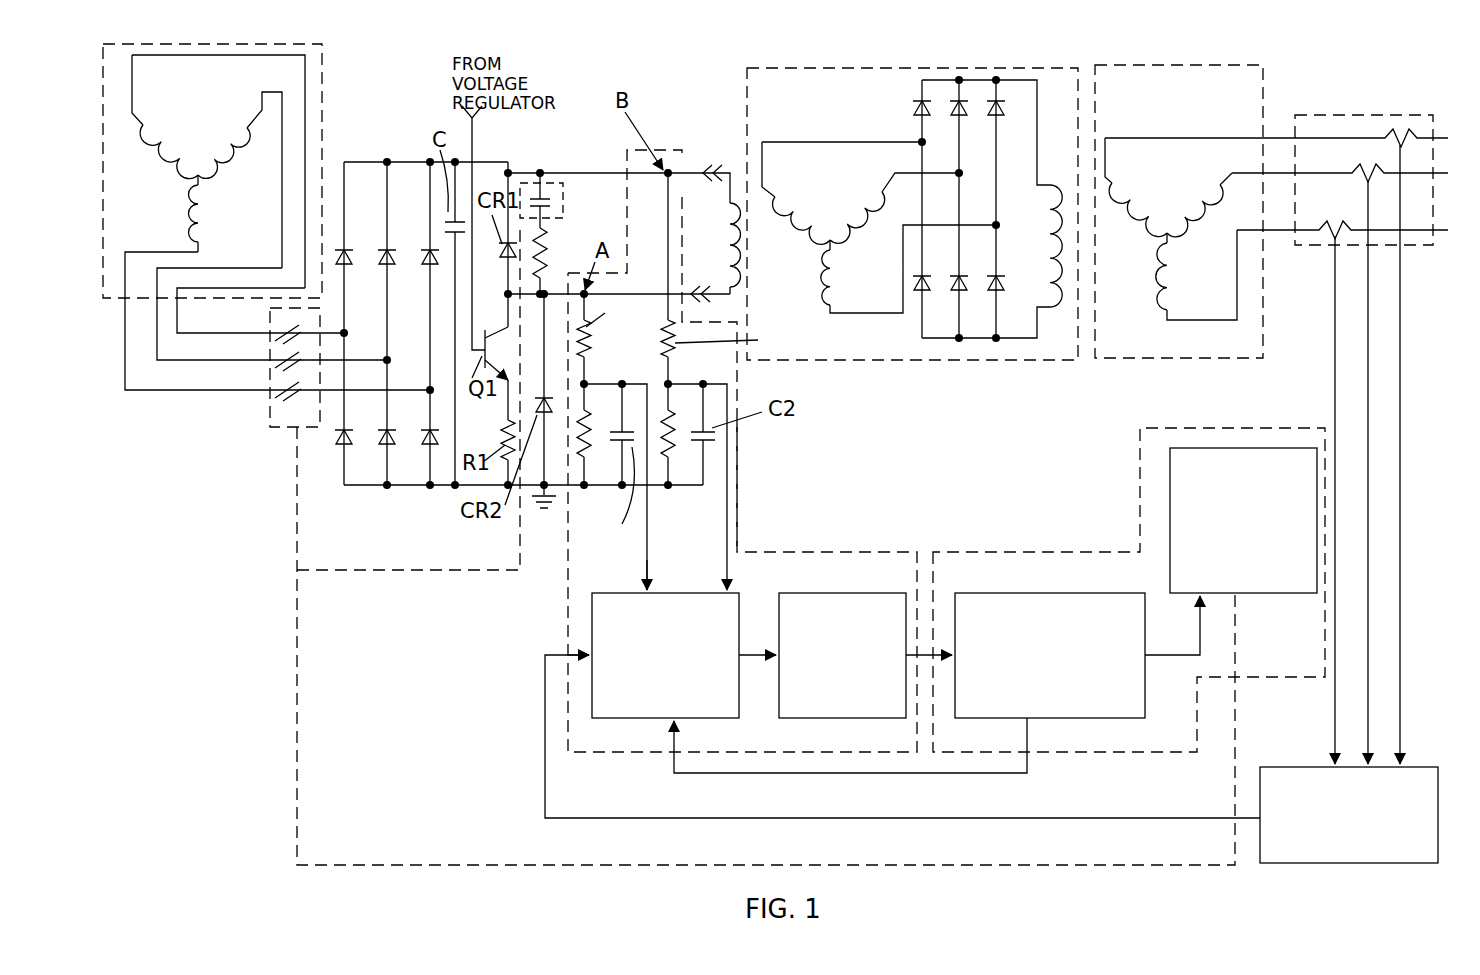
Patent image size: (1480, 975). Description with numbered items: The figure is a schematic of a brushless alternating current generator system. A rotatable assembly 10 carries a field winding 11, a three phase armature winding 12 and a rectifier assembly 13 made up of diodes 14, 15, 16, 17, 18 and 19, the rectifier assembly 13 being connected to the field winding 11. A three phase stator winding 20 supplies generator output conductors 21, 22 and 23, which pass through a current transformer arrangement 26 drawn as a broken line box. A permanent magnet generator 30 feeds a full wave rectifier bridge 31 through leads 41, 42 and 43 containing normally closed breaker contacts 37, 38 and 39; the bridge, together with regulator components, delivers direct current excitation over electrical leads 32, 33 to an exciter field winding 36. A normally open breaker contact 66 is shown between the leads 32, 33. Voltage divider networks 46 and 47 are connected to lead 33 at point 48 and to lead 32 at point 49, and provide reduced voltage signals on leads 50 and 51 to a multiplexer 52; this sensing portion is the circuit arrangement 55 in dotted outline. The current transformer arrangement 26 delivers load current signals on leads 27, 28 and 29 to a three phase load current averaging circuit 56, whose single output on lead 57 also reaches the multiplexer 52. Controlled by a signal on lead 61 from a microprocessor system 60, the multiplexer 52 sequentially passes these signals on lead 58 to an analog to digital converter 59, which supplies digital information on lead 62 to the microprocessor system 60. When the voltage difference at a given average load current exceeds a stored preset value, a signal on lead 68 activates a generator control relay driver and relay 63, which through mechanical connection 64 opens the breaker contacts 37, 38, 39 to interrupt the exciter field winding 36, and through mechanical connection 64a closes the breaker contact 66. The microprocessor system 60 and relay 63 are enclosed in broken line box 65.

The rotatable assembly 10 is at (810, 67).
The field winding 11 is at (1065, 258).
The three phase armature winding 12 is at (820, 180).
The rectifier assembly 13 is at (964, 224).
The diode 14 is at (912, 107).
The diode 15 is at (955, 100).
The diode 16 is at (993, 100).
The diode 17 is at (920, 292).
The diode 18 is at (955, 292).
The diode 19 is at (992, 292).
The three phase stator winding 20 is at (1140, 65).
The generator output conductor 21 is at (1275, 137).
The generator output conductor 22 is at (1292, 175).
The generator output conductor 23 is at (1280, 228).
The current transformer arrangement 26 is at (1345, 113).
The lead 27 is at (1333, 360).
The lead 28 is at (1368, 313).
The lead 29 is at (1400, 273).
The permanent magnet generator 30 is at (323, 60).
The full wave rectifier bridge 31 is at (363, 200).
The electrical lead 32 is at (520, 170).
The electrical lead 33 is at (558, 292).
The exciter field winding 36 is at (742, 257).
The normally closed breaker contact 37 is at (285, 332).
The normally closed breaker contact 38 is at (285, 360).
The normally closed breaker contact 39 is at (285, 390).
The lead 41 is at (177, 310).
The lead 42 is at (157, 348).
The lead 43 is at (183, 393).
The voltage divider network 46 is at (587, 418).
The voltage divider network 47 is at (675, 418).
The point 48 is at (586, 293).
The point 49 is at (668, 168).
The lead 50 is at (650, 530).
The lead 51 is at (738, 503).
The multiplexer 52 is at (627, 592).
The circuit arrangement 55 is at (568, 600).
The three phase load current averaging circuit 56 is at (1408, 765).
The lead 57 is at (1055, 818).
The lead 58 is at (748, 652).
The analog to digital converter 59 is at (838, 592).
The microprocessor system 60 is at (1145, 712).
The lead 61 is at (878, 773).
The lead 62 is at (925, 652).
The generator control relay driver and relay 63 is at (1205, 446).
The mechanical connection 64 is at (340, 865).
The mechanical connection 64a is at (340, 572).
The broken line box 65 is at (1050, 552).
The normally open breaker contact 66 is at (545, 195).
The lead 68 is at (1165, 655).